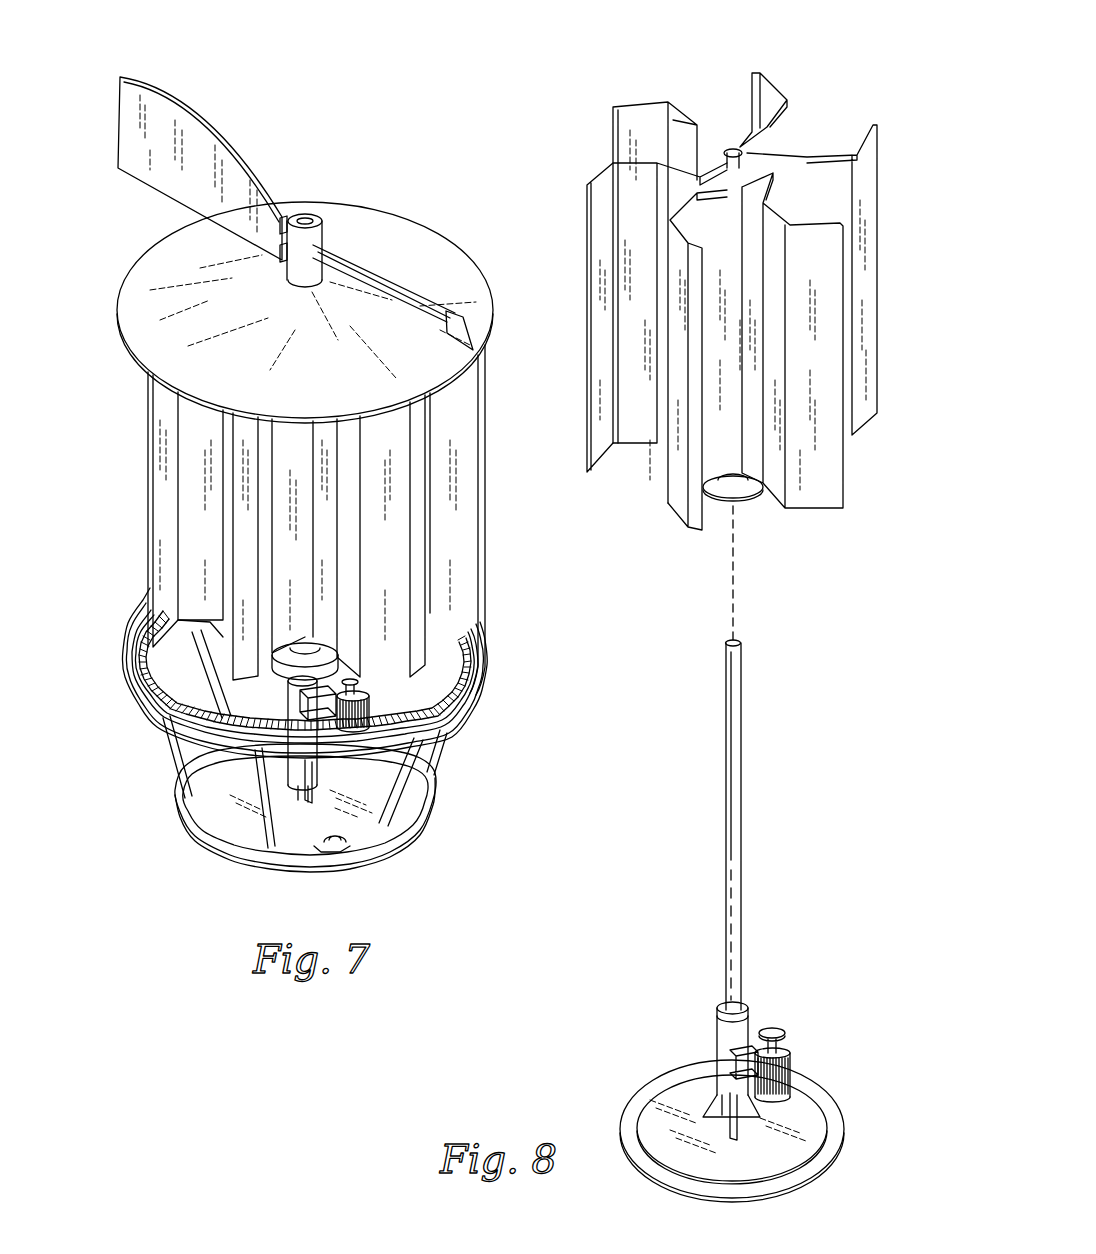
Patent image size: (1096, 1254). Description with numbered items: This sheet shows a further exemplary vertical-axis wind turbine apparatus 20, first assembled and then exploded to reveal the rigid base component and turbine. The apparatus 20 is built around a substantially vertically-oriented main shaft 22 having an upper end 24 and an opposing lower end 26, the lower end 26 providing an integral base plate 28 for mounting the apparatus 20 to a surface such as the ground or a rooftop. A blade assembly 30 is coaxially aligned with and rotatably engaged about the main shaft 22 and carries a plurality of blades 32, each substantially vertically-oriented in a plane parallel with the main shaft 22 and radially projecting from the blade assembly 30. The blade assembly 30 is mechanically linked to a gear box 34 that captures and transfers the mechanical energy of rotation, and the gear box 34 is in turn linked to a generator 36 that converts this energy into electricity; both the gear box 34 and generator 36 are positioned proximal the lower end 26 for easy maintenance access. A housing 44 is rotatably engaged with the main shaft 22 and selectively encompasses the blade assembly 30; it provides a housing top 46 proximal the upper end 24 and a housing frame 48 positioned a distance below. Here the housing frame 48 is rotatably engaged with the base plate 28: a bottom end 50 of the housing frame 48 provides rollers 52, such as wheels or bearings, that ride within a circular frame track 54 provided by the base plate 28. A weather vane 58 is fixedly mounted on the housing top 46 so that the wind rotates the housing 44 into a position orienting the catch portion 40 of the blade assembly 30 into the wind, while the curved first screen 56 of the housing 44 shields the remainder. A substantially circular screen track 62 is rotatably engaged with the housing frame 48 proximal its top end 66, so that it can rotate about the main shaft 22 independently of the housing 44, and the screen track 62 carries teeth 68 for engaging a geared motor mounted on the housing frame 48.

In FIG. 7, the vertical-axis wind turbine apparatus 20 is at (312, 100).
In FIG. 7, the main shaft 22 is at (310, 218).
In FIG. 8, the main shaft 22 is at (743, 749).
In FIG. 8, the upper end 24 is at (740, 643).
In FIG. 7, the lower end 26 is at (320, 787).
In FIG. 8, the lower end 26 is at (752, 1129).
In FIG. 7, the base plate 28 is at (428, 826).
In FIG. 8, the base plate 28 is at (836, 1152).
In FIG. 7, the blade assembly 30 is at (392, 637).
In FIG. 8, the blade assembly 30 is at (777, 90).
In FIG. 7, the blade 32 is at (160, 499).
In FIG. 8, the blade 32 is at (867, 173).
In FIG. 7, the gear box 34 is at (373, 702).
In FIG. 8, the gear box 34 is at (792, 1062).
In FIG. 7, the generator 36 is at (317, 700).
In FIG. 8, the generator 36 is at (752, 1050).
In FIG. 7, the catch portion 40 is at (150, 570).
In FIG. 7, the housing 44 is at (404, 212).
In FIG. 7, the housing top 46 is at (452, 258).
In FIG. 7, the housing frame 48 is at (436, 747).
In FIG. 7, the bottom end 50 is at (232, 822).
In FIG. 7, the rollers 52 is at (335, 845).
In FIG. 8, the circular frame track 54 is at (640, 1124).
In FIG. 7, the first screen 56 is at (484, 513).
In FIG. 7, the weather vane 58 is at (163, 110).
In FIG. 7, the screen track 62 is at (420, 777).
In FIG. 7, the top end 66 is at (128, 676).
In FIG. 7, the teeth 68 is at (197, 743).